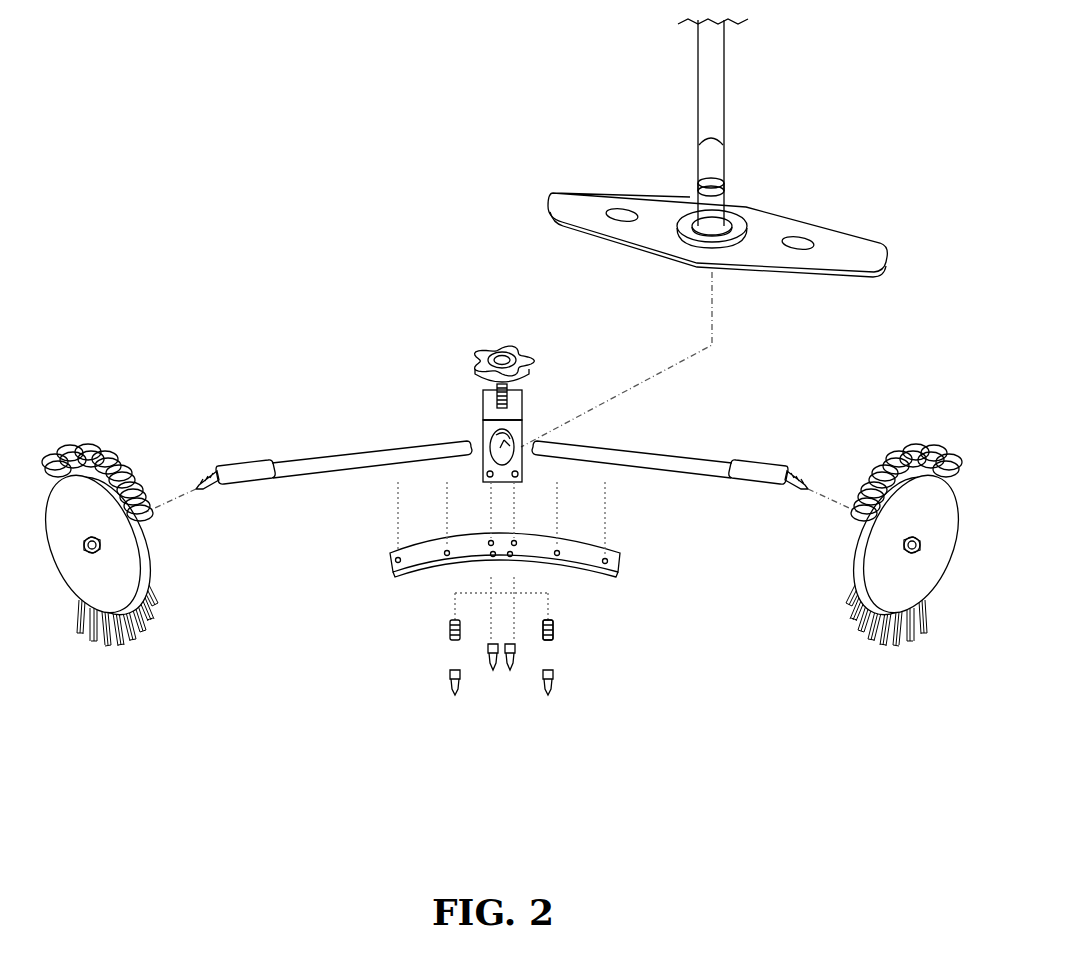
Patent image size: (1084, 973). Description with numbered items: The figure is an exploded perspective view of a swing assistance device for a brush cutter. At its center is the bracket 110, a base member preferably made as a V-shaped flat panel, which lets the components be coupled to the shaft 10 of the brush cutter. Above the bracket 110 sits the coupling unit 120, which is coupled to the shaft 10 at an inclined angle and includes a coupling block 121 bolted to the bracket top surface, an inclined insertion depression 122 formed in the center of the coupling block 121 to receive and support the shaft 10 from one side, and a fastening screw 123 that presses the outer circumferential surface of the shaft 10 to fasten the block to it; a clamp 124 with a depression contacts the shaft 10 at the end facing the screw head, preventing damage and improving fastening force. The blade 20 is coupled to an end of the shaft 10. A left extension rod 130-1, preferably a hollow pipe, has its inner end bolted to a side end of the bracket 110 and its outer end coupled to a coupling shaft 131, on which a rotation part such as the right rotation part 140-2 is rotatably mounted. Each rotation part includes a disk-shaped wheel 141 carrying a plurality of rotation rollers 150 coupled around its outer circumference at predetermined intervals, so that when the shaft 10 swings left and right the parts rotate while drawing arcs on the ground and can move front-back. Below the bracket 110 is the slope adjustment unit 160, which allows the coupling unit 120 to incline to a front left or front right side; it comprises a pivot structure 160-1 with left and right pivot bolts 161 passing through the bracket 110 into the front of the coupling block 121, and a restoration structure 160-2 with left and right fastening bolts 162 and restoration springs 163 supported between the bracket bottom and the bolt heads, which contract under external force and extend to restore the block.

The shaft 10 is at (724, 94).
The blade 20 is at (848, 243).
The bracket 110 is at (380, 542).
The coupling unit 120 is at (567, 266).
The coupling block 121 is at (483, 408).
The insertion depression 122 is at (523, 455).
The fastening screw 123 is at (497, 348).
The clamp 124 is at (483, 410).
The left extension rod 130-1 is at (320, 465).
The coupling shaft 131 is at (200, 492).
The right rotation part 140-2 is at (105, 430).
The disk-shaped wheel 141 is at (120, 560).
The rotation rollers 150 is at (118, 462).
The slope adjustment unit 160 is at (634, 736).
The pivot structure 160-1 is at (495, 676).
The restoration structure 160-2 is at (683, 692).
The pivot bolts 161 is at (493, 675).
The fastening bolts 162 is at (550, 678).
The restoration springs 163 is at (554, 632).